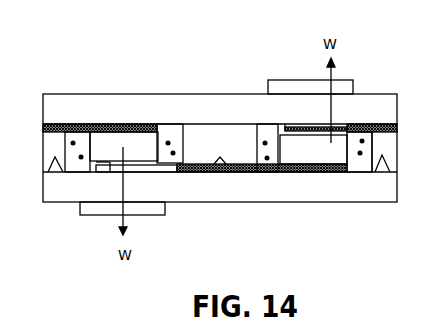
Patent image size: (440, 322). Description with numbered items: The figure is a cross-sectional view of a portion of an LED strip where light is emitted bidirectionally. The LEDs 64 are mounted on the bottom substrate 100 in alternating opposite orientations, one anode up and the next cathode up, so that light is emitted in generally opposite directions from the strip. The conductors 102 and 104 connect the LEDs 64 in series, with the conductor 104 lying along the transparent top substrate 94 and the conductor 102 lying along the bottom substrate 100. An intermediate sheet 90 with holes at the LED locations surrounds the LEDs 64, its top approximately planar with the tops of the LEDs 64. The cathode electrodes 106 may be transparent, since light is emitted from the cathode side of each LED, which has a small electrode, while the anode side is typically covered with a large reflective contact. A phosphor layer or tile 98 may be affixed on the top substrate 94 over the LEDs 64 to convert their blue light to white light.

The transparent top substrate 94 is at (62, 107).
The conductor 104 is at (99, 124).
The LED 64 is at (153, 142).
The phosphor layer or tile 98 is at (353, 90).
The intermediate sheet 90 is at (388, 151).
The bottom substrate 100 is at (337, 186).
The conductor 102 is at (247, 175).
The cathode electrode 106 is at (164, 172).